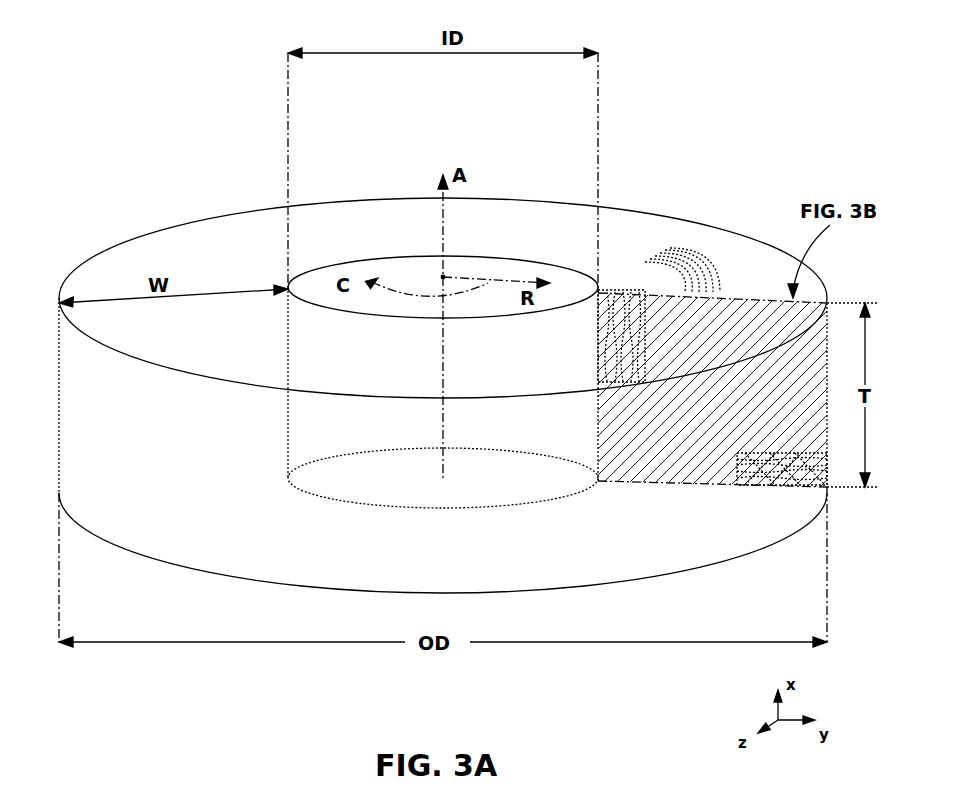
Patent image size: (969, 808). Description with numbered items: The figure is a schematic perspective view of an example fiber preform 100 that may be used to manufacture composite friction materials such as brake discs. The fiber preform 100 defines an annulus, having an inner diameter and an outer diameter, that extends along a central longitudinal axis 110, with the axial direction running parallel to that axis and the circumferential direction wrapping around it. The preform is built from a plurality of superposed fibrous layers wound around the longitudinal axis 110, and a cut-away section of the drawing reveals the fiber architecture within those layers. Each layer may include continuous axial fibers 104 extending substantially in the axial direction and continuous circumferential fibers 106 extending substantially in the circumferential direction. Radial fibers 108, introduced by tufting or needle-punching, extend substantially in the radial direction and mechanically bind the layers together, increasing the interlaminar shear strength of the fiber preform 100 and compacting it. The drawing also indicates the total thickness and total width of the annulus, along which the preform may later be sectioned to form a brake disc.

The fiber preform 100 is at (116, 44).
The continuous axial fibers 104 is at (598, 318).
The continuous circumferential fibers 106 is at (680, 255).
The radial fibers 108 is at (808, 486).
The central longitudinal axis 110 is at (440, 417).